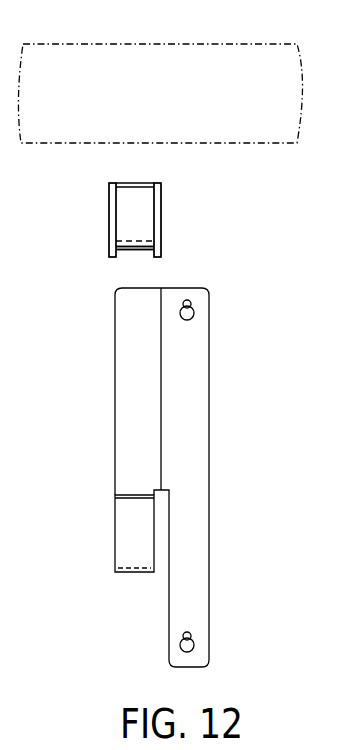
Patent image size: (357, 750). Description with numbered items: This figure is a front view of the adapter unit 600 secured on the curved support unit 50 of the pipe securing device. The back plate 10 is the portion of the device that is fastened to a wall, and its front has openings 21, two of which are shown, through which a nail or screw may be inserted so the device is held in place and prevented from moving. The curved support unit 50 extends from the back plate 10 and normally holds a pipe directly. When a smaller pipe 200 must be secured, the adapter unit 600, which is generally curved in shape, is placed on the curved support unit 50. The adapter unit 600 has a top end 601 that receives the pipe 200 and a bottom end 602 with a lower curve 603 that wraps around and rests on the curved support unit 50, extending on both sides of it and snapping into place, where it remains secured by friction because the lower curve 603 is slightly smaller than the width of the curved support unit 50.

The pipe 200 is at (166, 60).
The adapter unit 600 is at (141, 218).
The top end 601 is at (109, 183).
The bottom end 602 is at (161, 252).
The lower curve 603 is at (134, 250).
The back plate 10 is at (196, 397).
The opening 21 is at (190, 313).
The curved support unit 50 is at (128, 546).